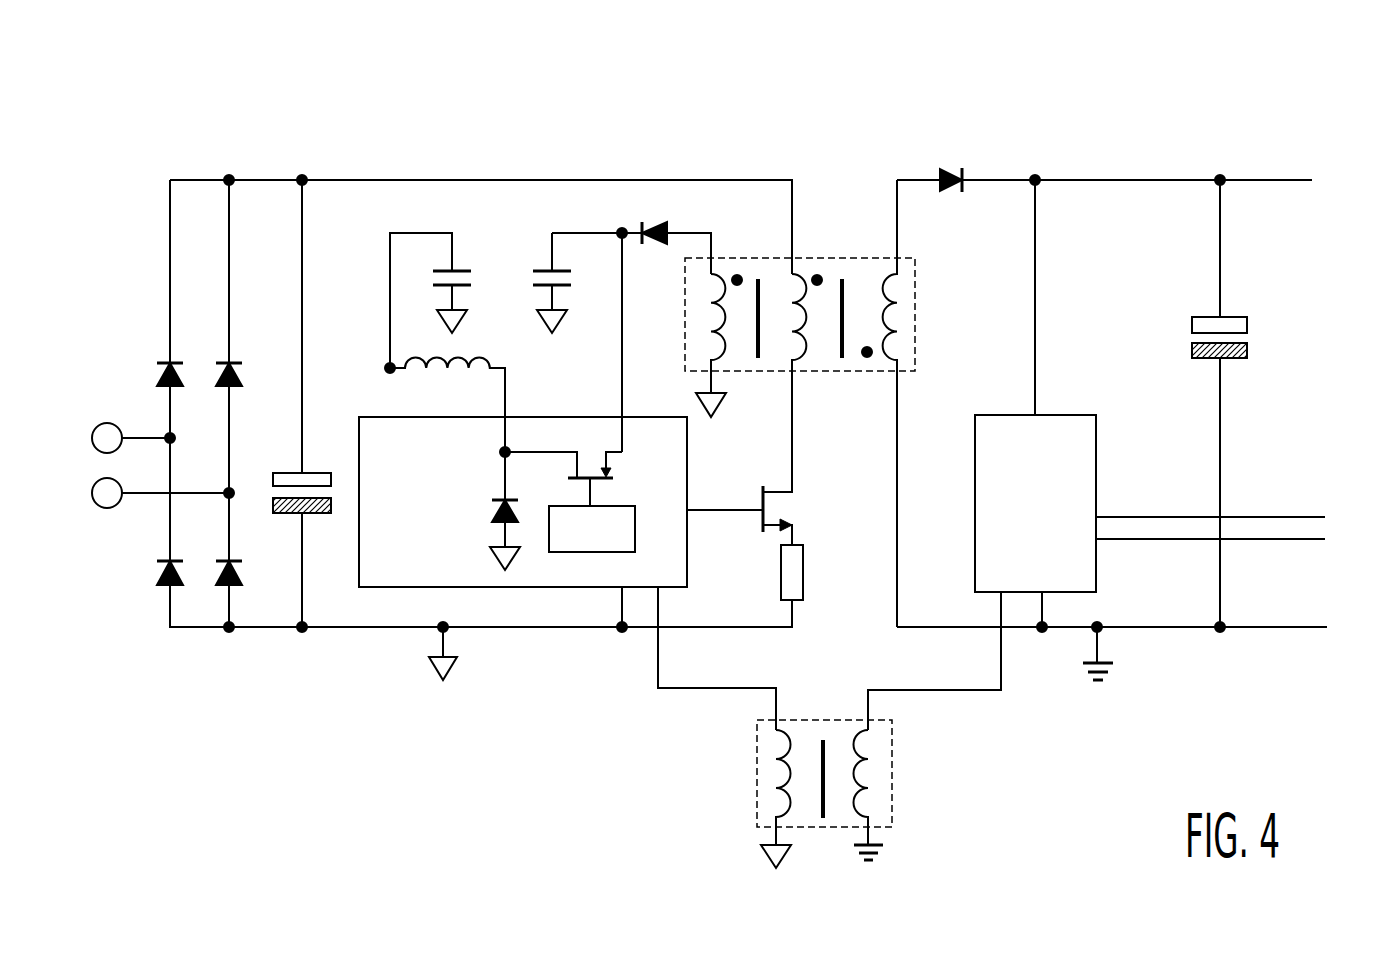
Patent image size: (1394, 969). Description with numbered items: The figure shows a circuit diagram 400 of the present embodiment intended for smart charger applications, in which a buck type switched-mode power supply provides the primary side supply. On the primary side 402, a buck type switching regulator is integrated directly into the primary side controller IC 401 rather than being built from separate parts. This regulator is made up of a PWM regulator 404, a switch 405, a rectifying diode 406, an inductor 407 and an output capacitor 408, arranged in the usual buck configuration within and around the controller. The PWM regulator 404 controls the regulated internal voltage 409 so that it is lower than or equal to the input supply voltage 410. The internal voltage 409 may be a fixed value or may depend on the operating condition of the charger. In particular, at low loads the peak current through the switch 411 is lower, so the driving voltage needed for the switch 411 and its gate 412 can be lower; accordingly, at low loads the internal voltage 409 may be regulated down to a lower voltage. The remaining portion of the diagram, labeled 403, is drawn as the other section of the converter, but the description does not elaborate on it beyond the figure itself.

The circuit diagram 400 is at (1346, 133).
The primary side controller IC 401 is at (632, 416).
The primary side 402 is at (878, 143).
The secondary side 403 is at (1312, 143).
The PWM regulator 404 is at (615, 553).
The switch 405 is at (610, 467).
The rectifying diode 406 is at (492, 521).
The inductor 407 is at (478, 355).
The output capacitor 408 is at (457, 264).
The Vint 409 is at (392, 300).
The input voltage Vcc 410 is at (606, 238).
The switch 411 is at (758, 521).
The gate1 412 is at (760, 483).